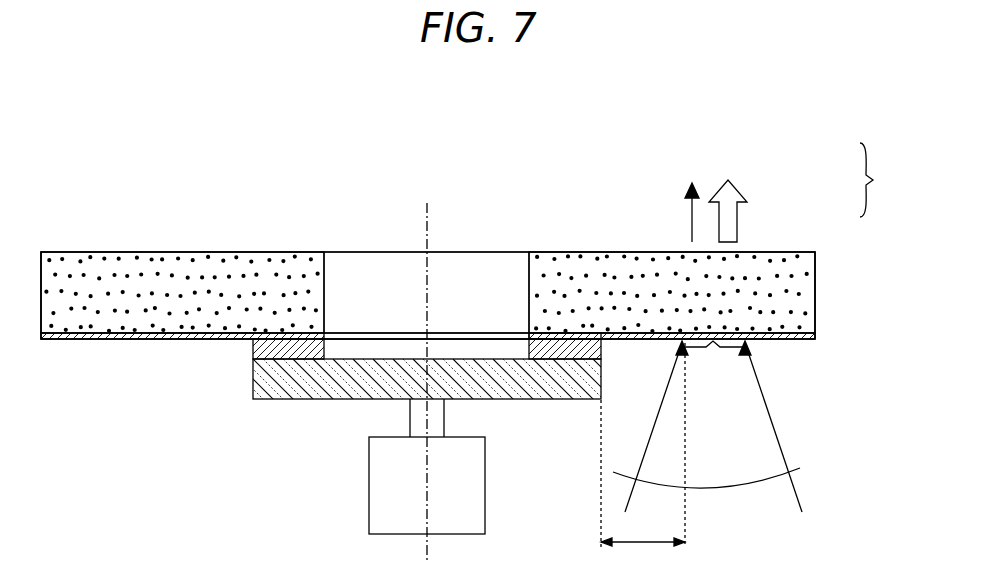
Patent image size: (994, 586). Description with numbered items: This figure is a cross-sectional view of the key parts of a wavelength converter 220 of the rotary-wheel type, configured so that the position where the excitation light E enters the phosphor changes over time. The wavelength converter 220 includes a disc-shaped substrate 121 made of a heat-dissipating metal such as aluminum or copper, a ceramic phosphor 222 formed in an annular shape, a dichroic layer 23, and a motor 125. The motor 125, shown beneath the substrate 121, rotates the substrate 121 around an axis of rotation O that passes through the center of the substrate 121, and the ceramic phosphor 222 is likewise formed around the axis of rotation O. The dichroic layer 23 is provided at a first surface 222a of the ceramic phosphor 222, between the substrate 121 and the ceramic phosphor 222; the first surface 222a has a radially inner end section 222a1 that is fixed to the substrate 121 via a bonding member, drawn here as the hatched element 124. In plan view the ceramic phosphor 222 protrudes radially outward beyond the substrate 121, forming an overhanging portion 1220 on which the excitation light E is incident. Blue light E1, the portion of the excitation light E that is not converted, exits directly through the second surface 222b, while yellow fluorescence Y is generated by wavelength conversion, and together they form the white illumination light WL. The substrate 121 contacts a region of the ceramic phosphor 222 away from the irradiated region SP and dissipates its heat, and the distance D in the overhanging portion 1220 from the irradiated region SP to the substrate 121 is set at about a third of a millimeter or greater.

The wavelength converter 220 is at (593, 133).
The ceramic phosphor 222 is at (468, 324).
The first surface 222a is at (423, 408).
The radially inner end section 222a1 is at (553, 338).
The second surface 222b is at (560, 252).
The overhanging portion 1220 is at (95, 251).
The dichroic layer 23 is at (130, 340).
The support member 124 is at (253, 347).
The substrate 121 is at (288, 395).
The motor 125 is at (475, 512).
The axis of rotation O is at (426, 212).
The blue light E1 is at (695, 183).
The yellow fluorescence Y is at (741, 192).
The white illumination light WL is at (887, 180).
The irradiated region SP is at (713, 362).
The distance D is at (643, 445).
The excitation light E is at (793, 470).